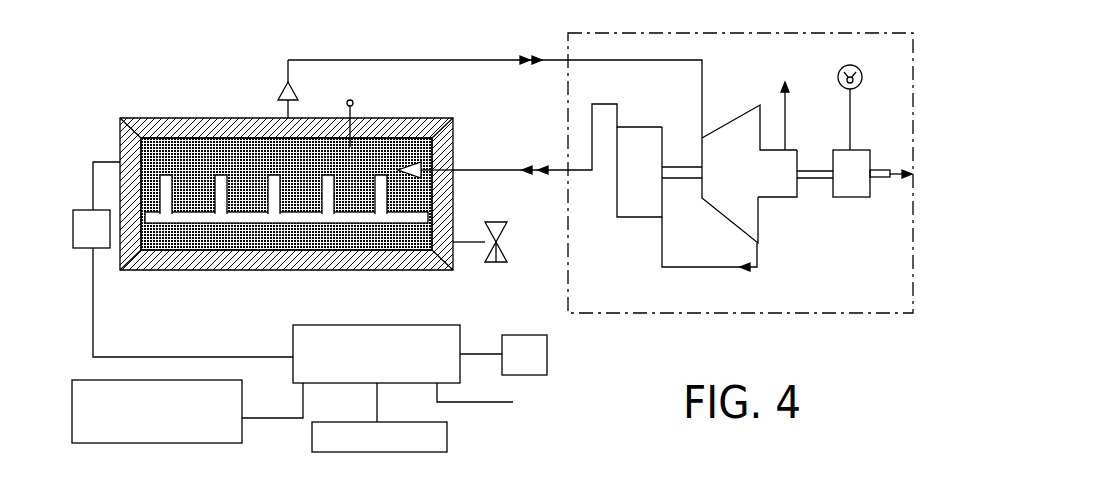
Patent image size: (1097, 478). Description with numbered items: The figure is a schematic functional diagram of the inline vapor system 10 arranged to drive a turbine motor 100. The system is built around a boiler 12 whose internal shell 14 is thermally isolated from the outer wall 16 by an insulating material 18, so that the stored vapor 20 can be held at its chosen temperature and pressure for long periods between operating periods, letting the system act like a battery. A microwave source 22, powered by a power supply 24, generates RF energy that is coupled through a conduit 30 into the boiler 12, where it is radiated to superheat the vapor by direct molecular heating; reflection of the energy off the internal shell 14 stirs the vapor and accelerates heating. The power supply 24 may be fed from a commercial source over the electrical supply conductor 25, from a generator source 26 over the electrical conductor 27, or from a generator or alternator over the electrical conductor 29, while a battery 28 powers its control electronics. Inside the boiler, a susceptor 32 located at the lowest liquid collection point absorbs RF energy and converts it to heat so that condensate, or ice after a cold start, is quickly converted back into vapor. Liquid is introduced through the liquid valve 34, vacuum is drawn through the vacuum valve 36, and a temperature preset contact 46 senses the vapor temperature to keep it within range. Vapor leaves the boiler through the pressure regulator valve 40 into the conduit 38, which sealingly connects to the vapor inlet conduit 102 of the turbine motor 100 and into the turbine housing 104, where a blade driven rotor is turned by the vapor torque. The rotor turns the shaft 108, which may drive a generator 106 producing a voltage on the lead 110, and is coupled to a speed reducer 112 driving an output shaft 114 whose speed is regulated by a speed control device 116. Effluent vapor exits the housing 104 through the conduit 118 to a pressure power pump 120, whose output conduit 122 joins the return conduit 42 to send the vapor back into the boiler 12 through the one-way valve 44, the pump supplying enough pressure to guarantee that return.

The inline vapor system 10 is at (233, 53).
The boiler 12 is at (178, 104).
The internal shell 14 is at (132, 117).
The outer wall 16 is at (445, 116).
The insulating material 18 is at (304, 117).
The vapor 20 is at (247, 195).
The microwave source 22 is at (100, 250).
The power supply 24 is at (292, 332).
The electrical supply conductor 25 is at (277, 418).
The generator source 26 is at (337, 422).
The electrical conductor 27 is at (377, 412).
The battery 28 is at (518, 334).
The electrical conductor 29 is at (487, 404).
The conduit 30 is at (110, 157).
The susceptor 32 is at (347, 219).
The liquid valve 34 is at (491, 222).
The vacuum valve 36 is at (495, 262).
The conduit 38 is at (490, 58).
The pressure regulator valve 40 is at (299, 82).
The conduit 42 is at (492, 168).
The one-way valve 44 is at (424, 146).
The temperature preset contact 46 is at (353, 100).
The turbine motor 100 is at (716, 26).
The vapor inlet conduit 102 is at (556, 66).
The turbine housing 104 is at (725, 136).
The generator 106 is at (770, 190).
The shaft 108 is at (812, 170).
The lead 110 is at (788, 106).
The speed reducer 112 is at (843, 198).
The output shaft 114 is at (878, 169).
The speed control device 116 is at (850, 66).
The conduit 118 is at (692, 268).
The pressure power pump 120 is at (628, 126).
The conduit 122 is at (553, 178).